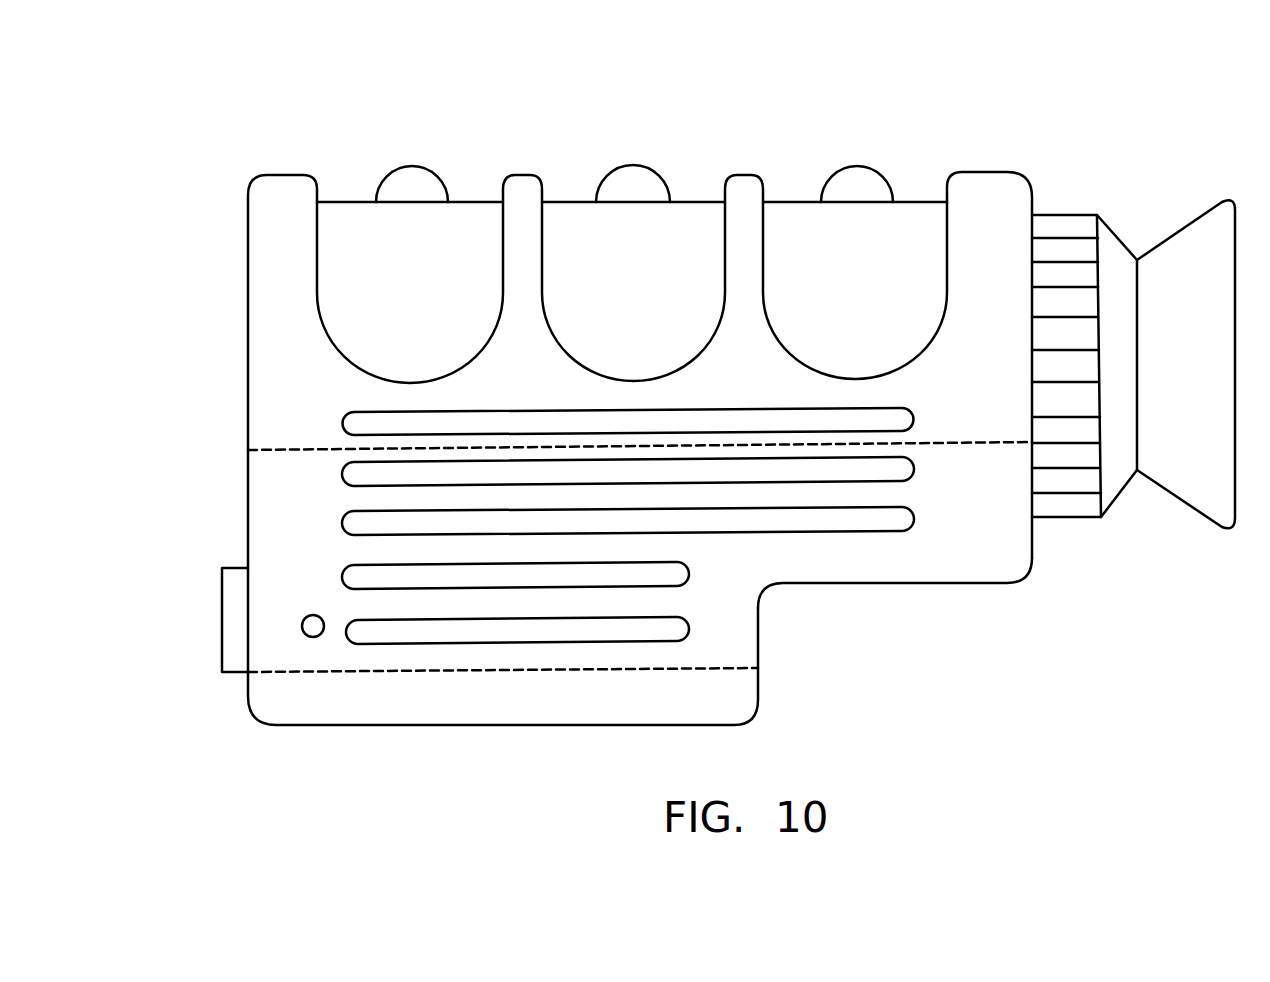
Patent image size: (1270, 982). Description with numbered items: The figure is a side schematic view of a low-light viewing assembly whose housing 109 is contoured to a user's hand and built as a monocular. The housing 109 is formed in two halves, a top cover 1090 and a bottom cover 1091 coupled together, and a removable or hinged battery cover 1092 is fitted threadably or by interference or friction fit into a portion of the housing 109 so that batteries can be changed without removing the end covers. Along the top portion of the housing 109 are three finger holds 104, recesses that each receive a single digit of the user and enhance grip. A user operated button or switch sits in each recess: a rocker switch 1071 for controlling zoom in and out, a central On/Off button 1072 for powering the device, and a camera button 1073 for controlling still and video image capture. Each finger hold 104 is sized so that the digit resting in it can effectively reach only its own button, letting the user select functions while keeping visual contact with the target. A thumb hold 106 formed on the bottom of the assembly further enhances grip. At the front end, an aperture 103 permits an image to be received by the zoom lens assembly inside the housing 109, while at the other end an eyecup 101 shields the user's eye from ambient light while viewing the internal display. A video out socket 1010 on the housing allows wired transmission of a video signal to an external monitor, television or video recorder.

The eyecup 101 is at (1172, 236).
The aperture 103 is at (222, 625).
The finger holds 104 is at (341, 168).
The thumb hold 106 is at (878, 584).
The rocker switch 1071 is at (857, 176).
The On/Off button 1072 is at (633, 177).
The camera button 1073 is at (412, 178).
The housing assembly 109 is at (1030, 144).
The video out socket 1010 is at (307, 636).
The top cover 1090 is at (288, 320).
The bottom cover 1091 is at (290, 471).
The battery cover 1092 is at (733, 697).